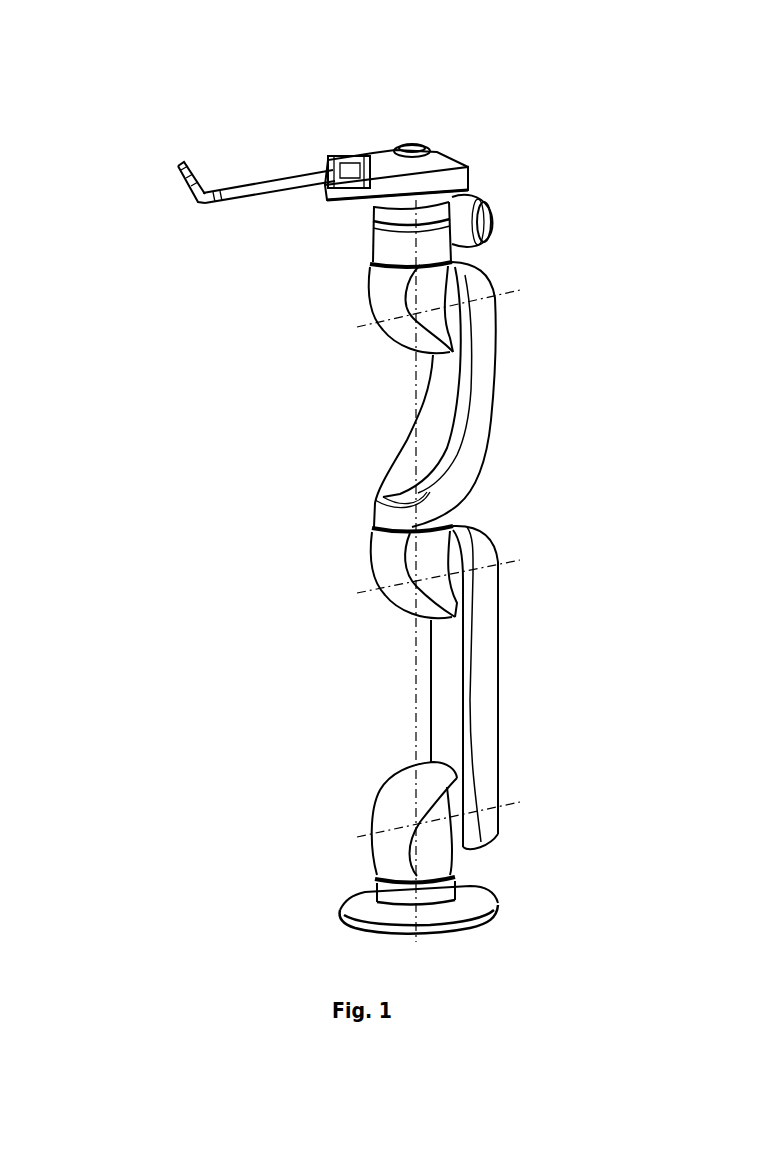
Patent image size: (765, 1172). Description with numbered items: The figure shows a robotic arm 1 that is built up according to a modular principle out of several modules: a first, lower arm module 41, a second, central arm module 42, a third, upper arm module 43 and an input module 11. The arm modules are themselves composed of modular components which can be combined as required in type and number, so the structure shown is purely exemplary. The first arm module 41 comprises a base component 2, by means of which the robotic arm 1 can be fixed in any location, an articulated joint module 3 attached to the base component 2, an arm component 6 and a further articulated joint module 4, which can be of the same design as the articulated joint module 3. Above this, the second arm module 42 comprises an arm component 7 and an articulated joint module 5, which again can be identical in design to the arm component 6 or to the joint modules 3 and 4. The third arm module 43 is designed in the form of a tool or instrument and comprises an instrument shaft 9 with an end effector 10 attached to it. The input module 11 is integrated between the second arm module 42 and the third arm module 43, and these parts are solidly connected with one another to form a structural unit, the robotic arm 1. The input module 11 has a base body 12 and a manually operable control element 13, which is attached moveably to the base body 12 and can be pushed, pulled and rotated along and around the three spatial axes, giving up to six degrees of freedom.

The robotic arm 1 is at (230, 465).
The base component 2 is at (390, 892).
The articulated joint module 3 is at (400, 810).
The articulated joint module 4 is at (387, 564).
The articulated joint module 5 is at (387, 292).
The arm component 6 is at (492, 699).
The arm component 7 is at (480, 420).
The instrument shaft 9 is at (278, 176).
The end effector 10 is at (179, 166).
The input module 11 is at (512, 170).
The base body 12 is at (387, 248).
The control element 13 is at (500, 220).
The first arm module 41 is at (373, 685).
The second arm module 42 is at (360, 400).
The third arm module 43 is at (402, 112).